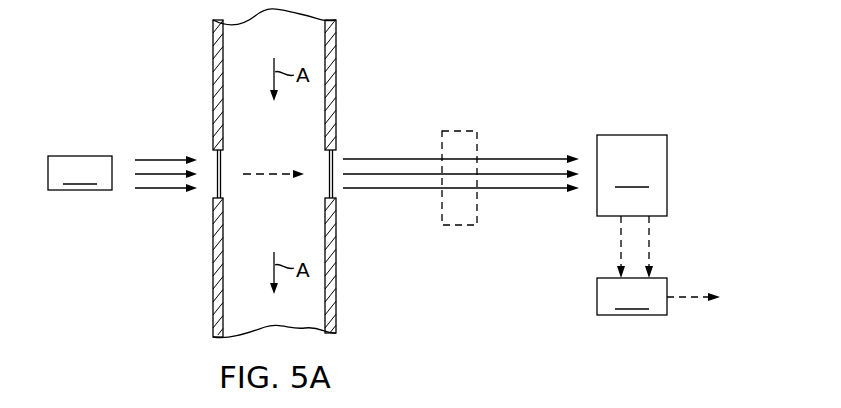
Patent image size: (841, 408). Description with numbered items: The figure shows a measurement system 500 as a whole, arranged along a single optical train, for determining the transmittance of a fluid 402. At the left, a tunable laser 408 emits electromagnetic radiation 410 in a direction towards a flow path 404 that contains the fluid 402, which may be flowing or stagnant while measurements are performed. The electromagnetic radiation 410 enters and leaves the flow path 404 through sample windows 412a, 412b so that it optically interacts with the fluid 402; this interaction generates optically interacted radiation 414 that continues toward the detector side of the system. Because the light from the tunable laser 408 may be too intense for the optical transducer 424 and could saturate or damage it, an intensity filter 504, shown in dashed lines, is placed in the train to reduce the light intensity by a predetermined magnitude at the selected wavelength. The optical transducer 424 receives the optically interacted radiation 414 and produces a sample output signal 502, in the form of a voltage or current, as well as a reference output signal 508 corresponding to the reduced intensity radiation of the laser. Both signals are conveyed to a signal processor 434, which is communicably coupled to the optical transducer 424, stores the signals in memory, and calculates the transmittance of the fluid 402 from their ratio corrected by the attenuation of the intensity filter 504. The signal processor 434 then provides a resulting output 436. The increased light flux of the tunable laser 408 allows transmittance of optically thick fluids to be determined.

The measurement system 500 is at (126, 67).
The tunable laser 408 is at (80, 173).
The electromagnetic radiation 410 is at (163, 158).
The flow path 404 is at (337, 42).
The fluid 402 is at (290, 146).
The sample window 412a is at (212, 198).
The sample window 412b is at (337, 198).
The optically interacted radiation 414 is at (364, 158).
The intensity filter 504 is at (458, 130).
The optical transducer 424 is at (632, 175).
The sample output signal 502 is at (619, 241).
The reference output signal 508 is at (651, 241).
The signal processor 434 is at (632, 296).
The output signal 436 is at (695, 293).